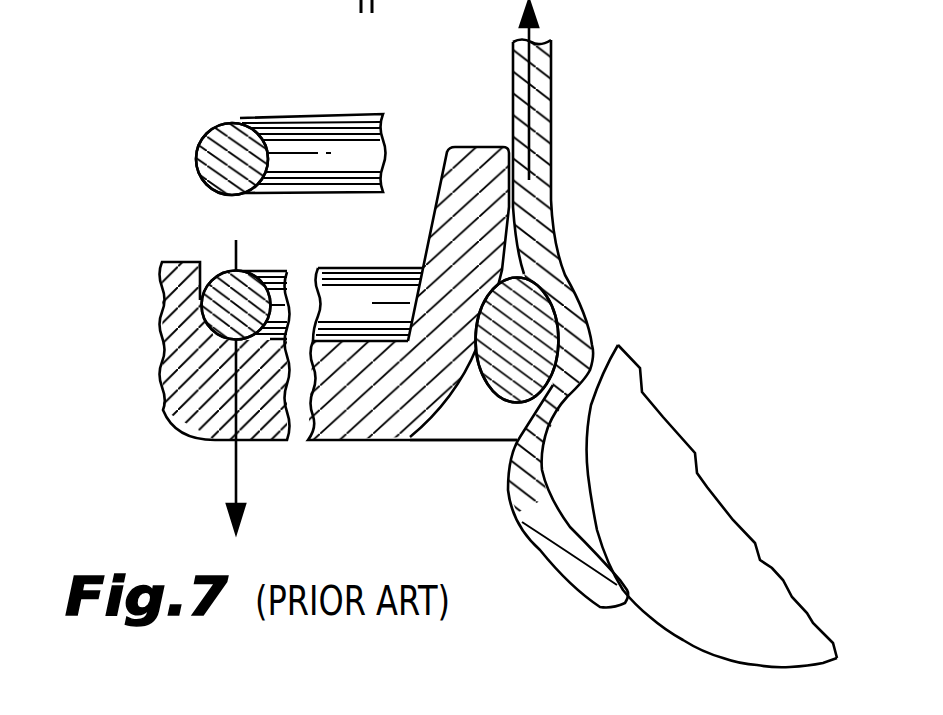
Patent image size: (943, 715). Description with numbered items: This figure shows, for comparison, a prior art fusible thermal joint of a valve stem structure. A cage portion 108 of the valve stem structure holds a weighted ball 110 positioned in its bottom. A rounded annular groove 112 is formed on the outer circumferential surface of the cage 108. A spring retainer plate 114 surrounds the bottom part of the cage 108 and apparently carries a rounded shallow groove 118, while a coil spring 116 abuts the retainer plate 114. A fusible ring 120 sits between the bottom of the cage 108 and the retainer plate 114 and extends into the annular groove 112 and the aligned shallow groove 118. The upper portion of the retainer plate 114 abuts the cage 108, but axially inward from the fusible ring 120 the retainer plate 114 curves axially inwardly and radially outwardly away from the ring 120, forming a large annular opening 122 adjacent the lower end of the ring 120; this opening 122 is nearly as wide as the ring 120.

The cage portion 108 is at (552, 176).
The weighted ball 110 is at (633, 390).
The rounded annular groove 112 is at (556, 332).
The spring retainer plate 114 is at (186, 408).
The coil spring 116 is at (200, 160).
The rounded shallow groove 118 is at (478, 302).
The fusible ring 120 is at (535, 318).
The annular opening 122 is at (455, 425).